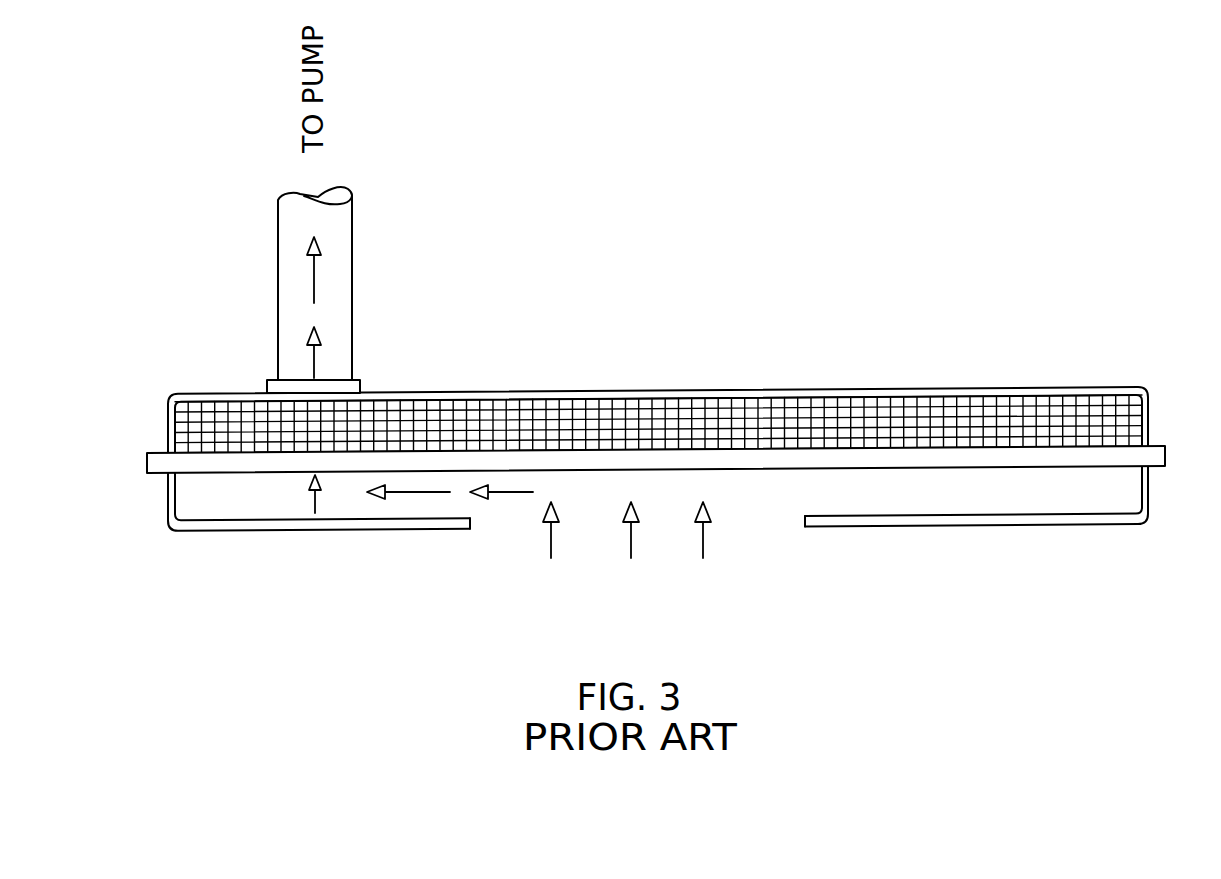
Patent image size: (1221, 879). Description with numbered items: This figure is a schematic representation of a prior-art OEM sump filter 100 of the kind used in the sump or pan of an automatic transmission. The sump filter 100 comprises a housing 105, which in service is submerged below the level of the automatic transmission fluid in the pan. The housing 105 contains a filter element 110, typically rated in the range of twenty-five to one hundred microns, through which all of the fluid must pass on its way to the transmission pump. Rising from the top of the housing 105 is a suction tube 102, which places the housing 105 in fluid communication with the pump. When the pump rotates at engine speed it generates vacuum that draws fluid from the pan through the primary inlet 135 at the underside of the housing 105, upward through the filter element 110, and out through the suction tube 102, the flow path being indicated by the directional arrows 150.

The sump filter 100 is at (687, 286).
The suction tube 102 is at (283, 219).
The housing 105 is at (883, 390).
The filter element 110 is at (562, 417).
The primary inlet 135 is at (747, 512).
The directional arrows 150 is at (318, 332).